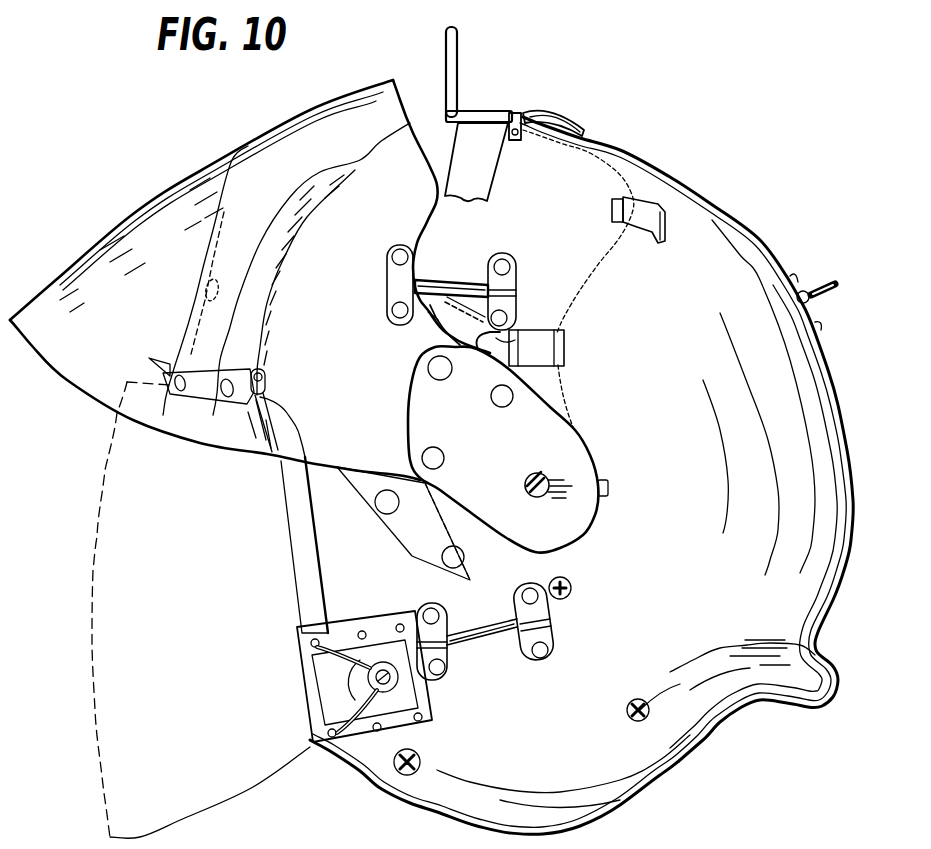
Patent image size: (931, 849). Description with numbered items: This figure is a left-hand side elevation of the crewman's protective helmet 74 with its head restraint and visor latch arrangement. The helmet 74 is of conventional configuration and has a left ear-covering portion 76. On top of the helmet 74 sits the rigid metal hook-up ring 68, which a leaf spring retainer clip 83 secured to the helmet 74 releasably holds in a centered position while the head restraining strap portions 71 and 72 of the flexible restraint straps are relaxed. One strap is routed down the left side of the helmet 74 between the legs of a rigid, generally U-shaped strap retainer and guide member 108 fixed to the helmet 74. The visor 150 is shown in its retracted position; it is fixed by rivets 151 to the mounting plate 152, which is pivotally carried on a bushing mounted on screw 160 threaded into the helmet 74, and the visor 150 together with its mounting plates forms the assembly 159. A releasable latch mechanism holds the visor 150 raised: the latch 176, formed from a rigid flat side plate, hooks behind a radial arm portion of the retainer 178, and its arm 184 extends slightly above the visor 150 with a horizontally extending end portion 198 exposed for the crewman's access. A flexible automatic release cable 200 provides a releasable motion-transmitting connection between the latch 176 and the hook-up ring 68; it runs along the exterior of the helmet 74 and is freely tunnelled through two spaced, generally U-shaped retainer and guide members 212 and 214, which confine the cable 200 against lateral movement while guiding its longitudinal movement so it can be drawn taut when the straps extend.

The visor 150 is at (193, 176).
The hook-up ring 68 is at (446, 44).
The leaf spring retainer clip 83 is at (516, 112).
The head restraining portion of strap 72 is at (555, 119).
The head restraining portion of strap 71 is at (486, 168).
The retainer and guide member 214 is at (655, 208).
The helmet 74 is at (748, 248).
The automatic release cable 200 is at (590, 270).
The strap retainer and guide member 108 is at (460, 283).
The end portion of arm 198 is at (490, 280).
The arm 184 is at (513, 330).
The latch 176 is at (441, 312).
The retainer and guide member 212 is at (566, 347).
The rivets 151 is at (435, 447).
The screw 160 is at (529, 491).
The mounting plate 152 is at (600, 476).
The retainer 178 is at (610, 486).
The assembly of visor and mounting plates 159 is at (449, 502).
The ear-covering portion 76 is at (443, 610).